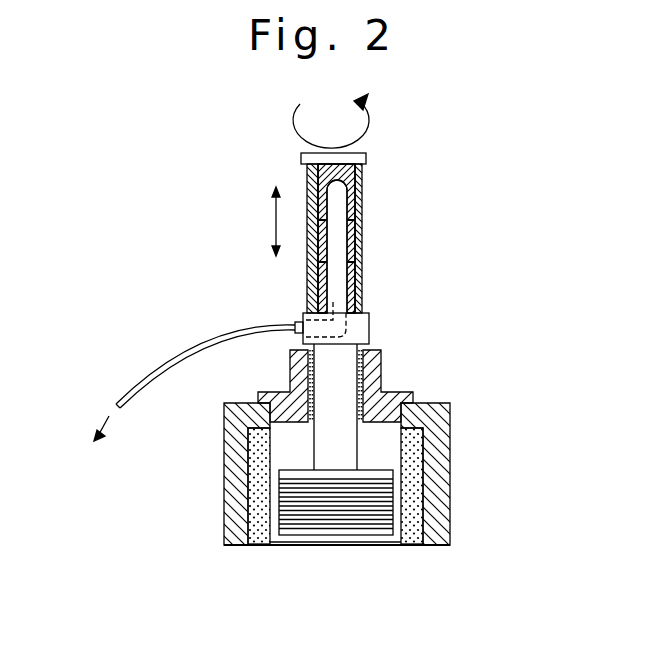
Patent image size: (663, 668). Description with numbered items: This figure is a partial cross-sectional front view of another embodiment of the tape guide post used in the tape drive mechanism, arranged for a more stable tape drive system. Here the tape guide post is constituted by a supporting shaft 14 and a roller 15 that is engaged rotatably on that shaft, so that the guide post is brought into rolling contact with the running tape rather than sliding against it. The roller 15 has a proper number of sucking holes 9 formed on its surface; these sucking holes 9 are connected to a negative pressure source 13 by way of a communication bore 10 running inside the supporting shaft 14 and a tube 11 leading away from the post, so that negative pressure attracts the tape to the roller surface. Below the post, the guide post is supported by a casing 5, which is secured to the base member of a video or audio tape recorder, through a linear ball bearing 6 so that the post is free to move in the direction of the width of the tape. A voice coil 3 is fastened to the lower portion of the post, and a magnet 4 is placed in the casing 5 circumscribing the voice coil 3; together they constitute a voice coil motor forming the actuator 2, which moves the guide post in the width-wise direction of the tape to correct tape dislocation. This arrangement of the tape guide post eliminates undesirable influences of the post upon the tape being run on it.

The actuator 2 is at (473, 503).
The voice coil 3 is at (312, 523).
The magnet 4 is at (413, 533).
The casing 5 is at (447, 434).
The linear ball bearing 6 is at (383, 373).
The sucking holes 9 is at (352, 213).
The communication bore 10 is at (333, 288).
The tube 11 is at (163, 362).
The negative pressure source 13 is at (92, 444).
The supporting shaft 14 is at (348, 260).
The roller 15 is at (307, 185).